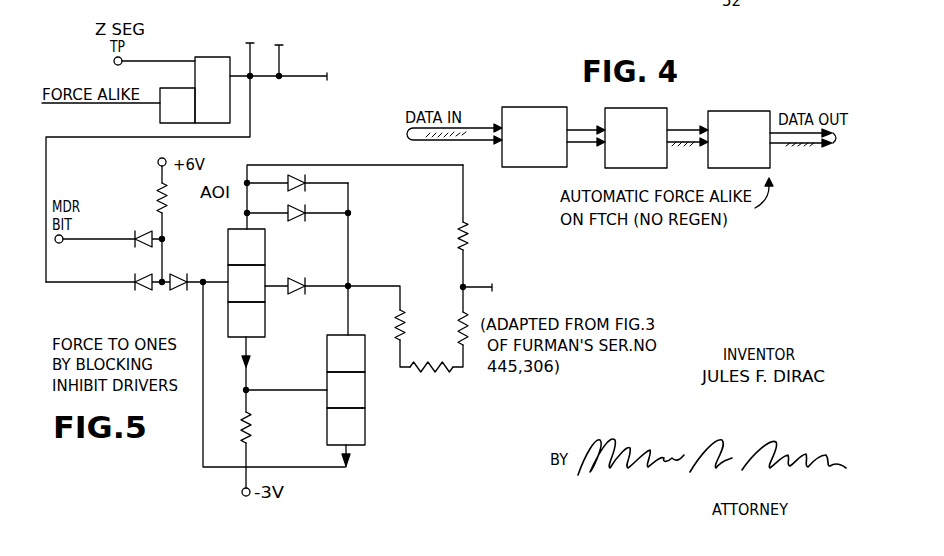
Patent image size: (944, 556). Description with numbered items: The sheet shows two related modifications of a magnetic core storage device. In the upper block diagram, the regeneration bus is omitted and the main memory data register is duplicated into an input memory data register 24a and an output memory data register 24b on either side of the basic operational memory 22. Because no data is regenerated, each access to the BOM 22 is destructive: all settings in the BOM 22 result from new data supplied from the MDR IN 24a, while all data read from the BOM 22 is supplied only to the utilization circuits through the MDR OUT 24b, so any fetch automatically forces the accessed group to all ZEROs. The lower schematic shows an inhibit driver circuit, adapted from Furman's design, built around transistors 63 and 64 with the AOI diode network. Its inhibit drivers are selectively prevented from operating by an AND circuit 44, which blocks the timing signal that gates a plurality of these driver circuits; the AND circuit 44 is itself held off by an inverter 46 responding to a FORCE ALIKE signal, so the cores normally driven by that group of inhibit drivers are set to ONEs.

In FIG. 4, the basic operational memory 22 is at (644, 114).
In FIG. 4, the input memory data register 24a is at (514, 107).
In FIG. 4, the output memory data register 24b is at (739, 111).
In FIG. 5, the AND circuit 44 is at (205, 57).
In FIG. 5, the inverter 46 is at (160, 113).
In FIG. 5, the NPN transistor 63 is at (265, 322).
In FIG. 5, the NPN transistor 64 is at (366, 423).